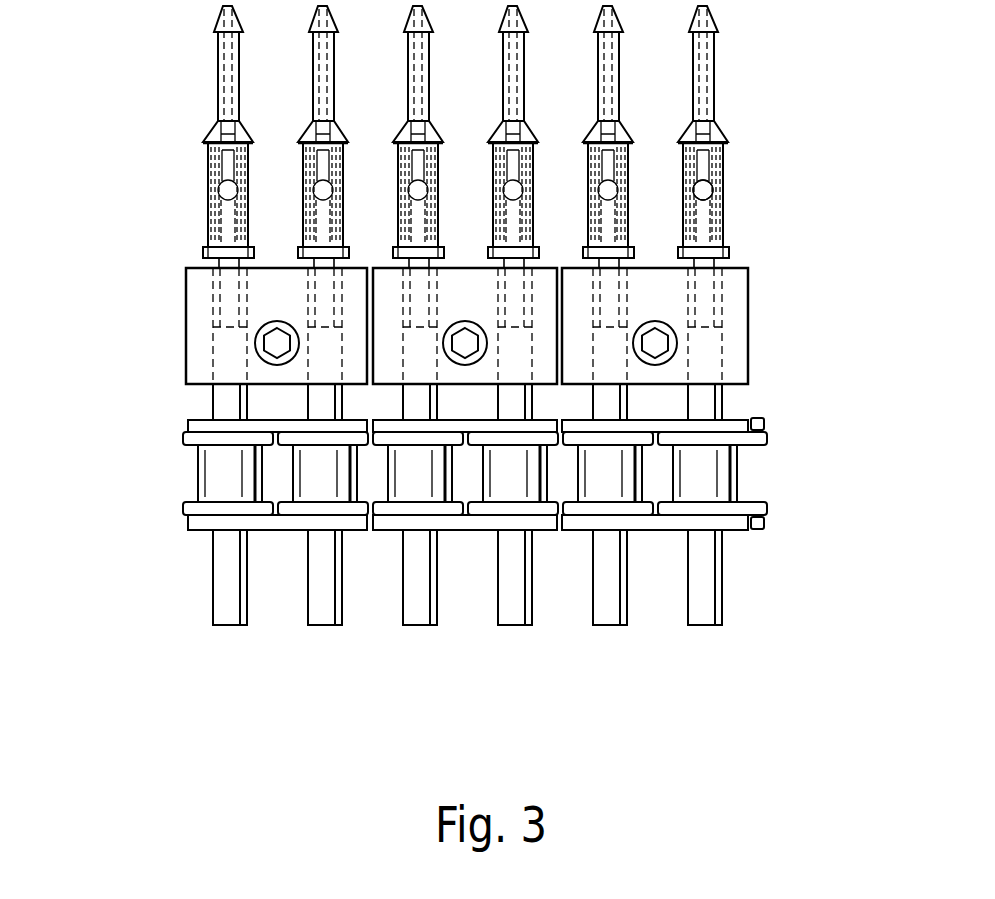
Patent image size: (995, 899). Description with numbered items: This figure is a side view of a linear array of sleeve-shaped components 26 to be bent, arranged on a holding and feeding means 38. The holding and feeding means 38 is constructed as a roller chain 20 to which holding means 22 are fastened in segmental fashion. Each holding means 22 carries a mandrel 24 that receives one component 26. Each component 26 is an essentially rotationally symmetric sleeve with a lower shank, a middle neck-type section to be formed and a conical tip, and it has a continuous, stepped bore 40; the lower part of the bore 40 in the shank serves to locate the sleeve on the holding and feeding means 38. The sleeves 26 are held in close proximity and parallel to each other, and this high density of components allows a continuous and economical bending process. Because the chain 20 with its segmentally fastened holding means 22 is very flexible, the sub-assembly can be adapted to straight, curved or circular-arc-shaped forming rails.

The roller chain 20 is at (776, 473).
The holding means 22 is at (771, 327).
The mandrel 24 is at (726, 270).
The component to be bent 26 is at (168, 173).
The holding and feeding means 38 is at (149, 409).
The stepped bore 40 is at (712, 207).